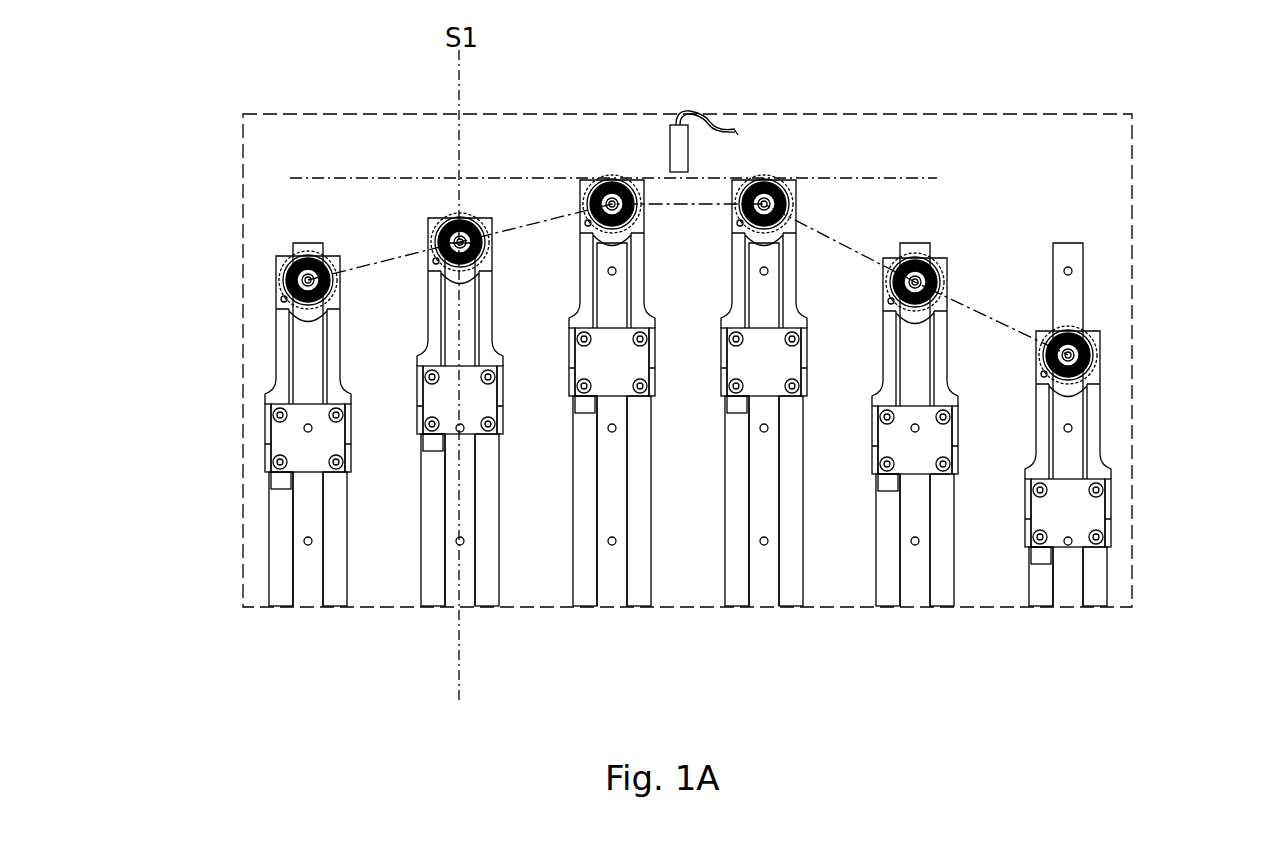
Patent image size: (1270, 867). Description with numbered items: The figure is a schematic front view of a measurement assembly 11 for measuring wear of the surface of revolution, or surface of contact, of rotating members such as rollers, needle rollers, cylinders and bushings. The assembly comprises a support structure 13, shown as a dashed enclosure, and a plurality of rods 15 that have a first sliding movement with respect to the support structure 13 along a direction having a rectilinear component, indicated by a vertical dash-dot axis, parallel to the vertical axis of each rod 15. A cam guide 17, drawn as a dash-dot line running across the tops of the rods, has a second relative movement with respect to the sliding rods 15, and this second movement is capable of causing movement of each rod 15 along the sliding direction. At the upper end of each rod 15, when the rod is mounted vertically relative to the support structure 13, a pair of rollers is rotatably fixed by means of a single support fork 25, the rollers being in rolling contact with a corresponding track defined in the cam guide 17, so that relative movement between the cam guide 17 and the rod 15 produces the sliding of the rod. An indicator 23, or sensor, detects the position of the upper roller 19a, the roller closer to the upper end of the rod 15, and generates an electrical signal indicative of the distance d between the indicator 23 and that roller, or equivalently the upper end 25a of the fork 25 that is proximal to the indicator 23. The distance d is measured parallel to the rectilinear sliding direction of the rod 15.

The measurement assembly 11 is at (372, 640).
The support structure 13 is at (1103, 157).
The rod 15 is at (800, 367).
The cam guide 17 is at (376, 246).
The upper roller 19a is at (1124, 355).
The indicator 23 is at (655, 150).
The support fork 25 is at (268, 345).
The upper end of the fork 25a is at (937, 243).
The distance d is at (705, 171).